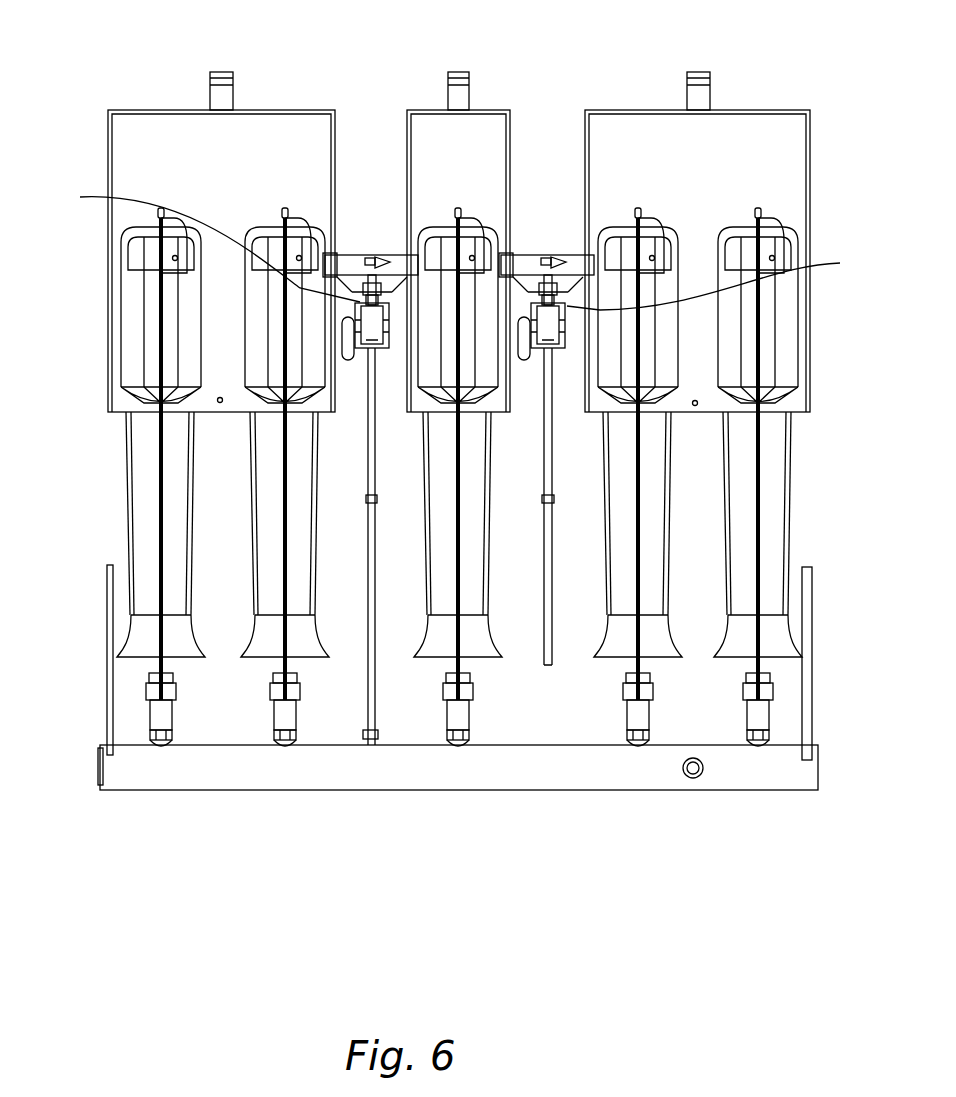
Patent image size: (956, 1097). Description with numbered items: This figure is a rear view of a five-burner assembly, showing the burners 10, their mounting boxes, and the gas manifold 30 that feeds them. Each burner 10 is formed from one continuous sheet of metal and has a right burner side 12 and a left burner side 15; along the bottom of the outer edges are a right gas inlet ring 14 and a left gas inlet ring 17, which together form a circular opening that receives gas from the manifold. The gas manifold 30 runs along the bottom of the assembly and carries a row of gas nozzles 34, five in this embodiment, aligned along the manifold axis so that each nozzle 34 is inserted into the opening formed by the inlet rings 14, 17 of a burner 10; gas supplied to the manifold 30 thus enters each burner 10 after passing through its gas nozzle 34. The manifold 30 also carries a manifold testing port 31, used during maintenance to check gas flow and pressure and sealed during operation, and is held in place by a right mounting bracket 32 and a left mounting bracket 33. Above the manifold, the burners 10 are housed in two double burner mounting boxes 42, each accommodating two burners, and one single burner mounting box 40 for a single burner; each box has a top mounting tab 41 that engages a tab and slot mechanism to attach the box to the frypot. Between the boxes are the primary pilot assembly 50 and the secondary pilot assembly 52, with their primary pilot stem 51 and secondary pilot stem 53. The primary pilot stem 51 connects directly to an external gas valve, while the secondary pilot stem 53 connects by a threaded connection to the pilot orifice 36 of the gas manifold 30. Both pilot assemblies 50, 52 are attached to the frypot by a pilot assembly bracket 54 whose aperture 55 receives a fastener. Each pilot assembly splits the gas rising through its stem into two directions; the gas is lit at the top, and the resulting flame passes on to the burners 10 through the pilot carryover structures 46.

The burner 10 is at (497, 593).
The right burner side 12 is at (473, 505).
The right gas inlet ring 14 is at (468, 697).
The left burner side 15 is at (450, 477).
The left gas inlet ring 17 is at (452, 692).
The gas manifold 30 is at (802, 777).
The manifold testing port 31 is at (703, 773).
The right mounting bracket 32 is at (107, 645).
The left mounting bracket 33 is at (812, 633).
The gas nozzle 34 is at (468, 725).
The pilot orifice 36 is at (373, 755).
The single burner mounting box 40 is at (438, 135).
The top mounting tab 41 is at (223, 72).
The double burner mounting box 42 is at (140, 132).
The pilot carryover structure 46 is at (352, 262).
The primary pilot assembly 50 is at (721, 280).
The primary pilot stem 51 is at (548, 665).
The secondary pilot assembly 52 is at (202, 241).
The secondary pilot stem 53 is at (367, 608).
The pilot assembly bracket 54 is at (527, 355).
The aperture 55 is at (357, 365).